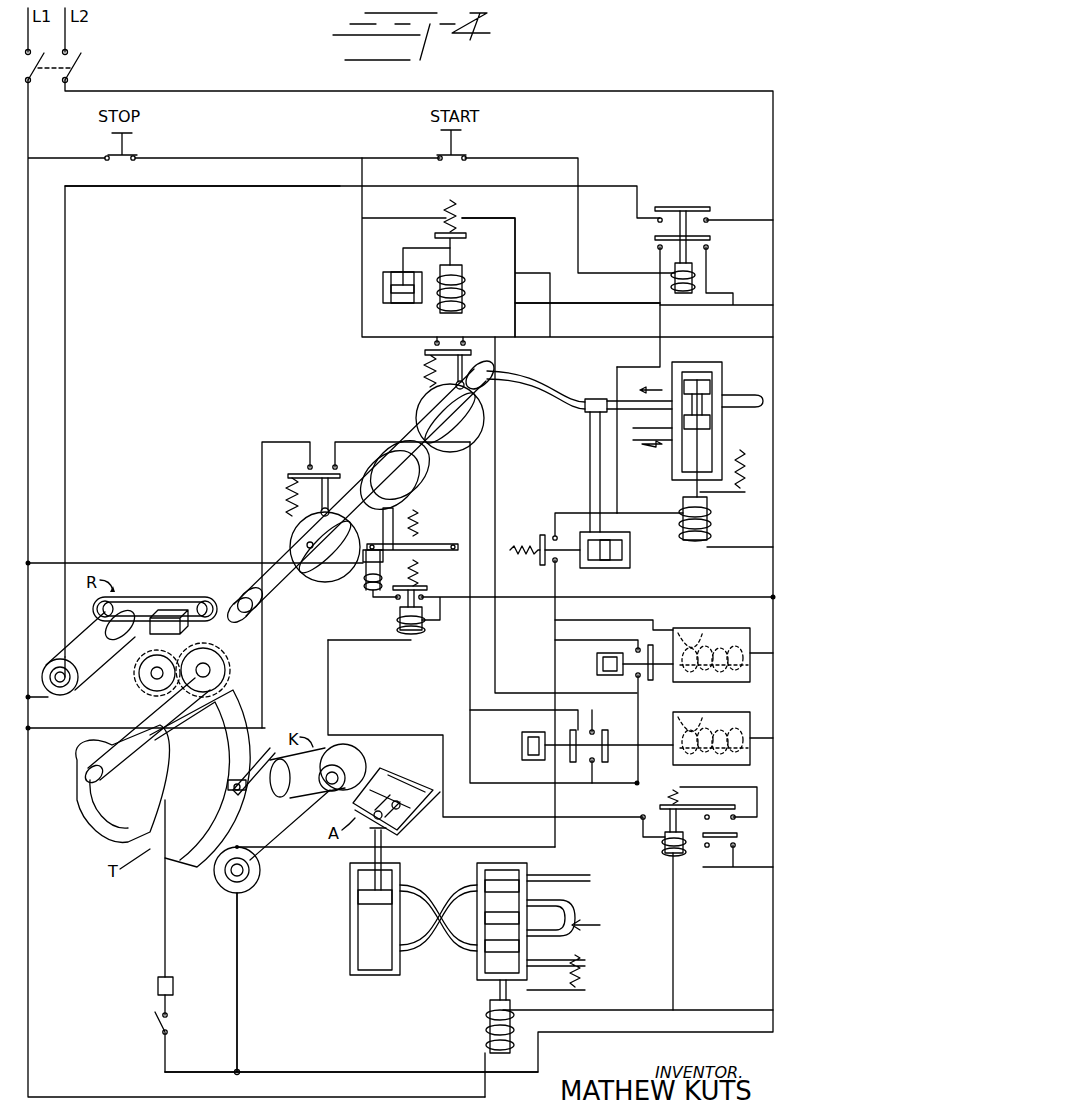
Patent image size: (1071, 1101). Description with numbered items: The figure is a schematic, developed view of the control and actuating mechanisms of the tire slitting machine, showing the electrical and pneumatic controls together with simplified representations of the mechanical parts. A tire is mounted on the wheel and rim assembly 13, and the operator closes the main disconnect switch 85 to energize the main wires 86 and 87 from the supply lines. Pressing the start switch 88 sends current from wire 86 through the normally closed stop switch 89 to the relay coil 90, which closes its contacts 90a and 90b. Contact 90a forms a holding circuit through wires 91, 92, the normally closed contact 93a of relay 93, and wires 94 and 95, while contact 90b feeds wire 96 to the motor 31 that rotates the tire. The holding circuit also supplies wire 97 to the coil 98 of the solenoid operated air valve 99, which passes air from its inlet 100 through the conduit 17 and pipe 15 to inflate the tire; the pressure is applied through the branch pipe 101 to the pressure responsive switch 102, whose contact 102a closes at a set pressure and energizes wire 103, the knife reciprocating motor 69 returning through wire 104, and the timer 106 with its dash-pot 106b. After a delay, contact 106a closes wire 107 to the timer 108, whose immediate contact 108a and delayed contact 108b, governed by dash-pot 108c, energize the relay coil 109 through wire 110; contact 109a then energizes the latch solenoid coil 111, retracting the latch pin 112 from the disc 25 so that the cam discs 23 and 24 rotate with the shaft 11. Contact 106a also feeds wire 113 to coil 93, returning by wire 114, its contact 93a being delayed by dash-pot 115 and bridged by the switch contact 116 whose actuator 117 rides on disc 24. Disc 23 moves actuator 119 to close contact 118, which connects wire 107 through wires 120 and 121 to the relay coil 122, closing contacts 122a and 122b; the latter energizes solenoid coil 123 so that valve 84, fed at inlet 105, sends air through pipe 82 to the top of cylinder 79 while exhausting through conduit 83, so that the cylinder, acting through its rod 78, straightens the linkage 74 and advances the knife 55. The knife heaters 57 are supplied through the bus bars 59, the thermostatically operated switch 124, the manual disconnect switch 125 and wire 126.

The shaft 11 is at (240, 660).
The wheel and rim assembly 13 is at (100, 832).
The pipe 15 is at (90, 820).
The pipe or conduit 17 is at (550, 400).
The cam disc 23 is at (295, 551).
The cam disc 24 is at (420, 420).
The disc 25 is at (405, 495).
The motor 31 is at (78, 690).
The knife 55 is at (215, 770).
The electrical heater 57 is at (228, 785).
The bus bars 59 is at (74, 732).
The motor 69 is at (255, 880).
The linkage 74 is at (390, 770).
The piston rod 78 is at (381, 858).
The cylinder 79 is at (350, 945).
The pipe 82 is at (460, 955).
The conduit 83 is at (455, 882).
The valve 84 is at (482, 982).
The main disconnect switch 85 is at (83, 68).
The main wire or lead 86 is at (28, 130).
The main wire or lead 87 is at (692, 94).
The start switch 88 is at (465, 145).
The stop switch 89 is at (135, 145).
The relay coil 90 is at (692, 275).
The relay contact 90a is at (710, 240).
The relay contact 90b is at (710, 210).
The wire 91 is at (359, 216).
The wire 92 is at (434, 216).
The relay 93 is at (462, 300).
The relay contact 93a is at (458, 252).
The wire 94 is at (515, 240).
The wire 95 is at (633, 305).
The wire 96 is at (189, 190).
The wire 97 is at (617, 375).
The solenoid coil 98 is at (707, 528).
The solenoid operated air valve 99 is at (722, 435).
The inlet 100 is at (764, 418).
The branch pipe 101 is at (588, 480).
The pressure responsive switch 102 is at (630, 560).
The switch contact 102a is at (545, 530).
The wire 103 is at (552, 618).
The wire 104 is at (237, 1010).
The inlet 105 is at (590, 918).
The timer 106 is at (746, 630).
The timer contact 106a is at (630, 682).
The dash-pot 106b is at (592, 650).
The wire 107 is at (580, 710).
The timer 108 is at (758, 713).
The timer contact 108a is at (632, 776).
The timer contact 108b is at (572, 760).
The dash-pot 108c is at (535, 726).
The relay coil 109 is at (395, 635).
The relay contact 109a is at (430, 574).
The wire 110 is at (652, 600).
The latch operating solenoid coil 111 is at (350, 598).
The latch pin 112 is at (395, 535).
The wire 113 is at (495, 672).
The wire 114 is at (715, 338).
The dash-pot 115 is at (383, 285).
The switch contact 116 is at (422, 354).
The operating member or actuator 117 is at (470, 362).
The switch contact 118 is at (322, 440).
The operating member or actuator 119 is at (335, 435).
The wire 120 is at (470, 694).
The wire 121 is at (404, 732).
The relay coil 122 is at (654, 857).
The relay contact 122a is at (770, 805).
The relay contact 122b is at (720, 852).
The solenoid coil 123 is at (488, 1030).
The thermostatically operated switch 124 is at (158, 986).
The manual disconnect switch 125 is at (155, 1032).
The wire 126 is at (232, 1070).